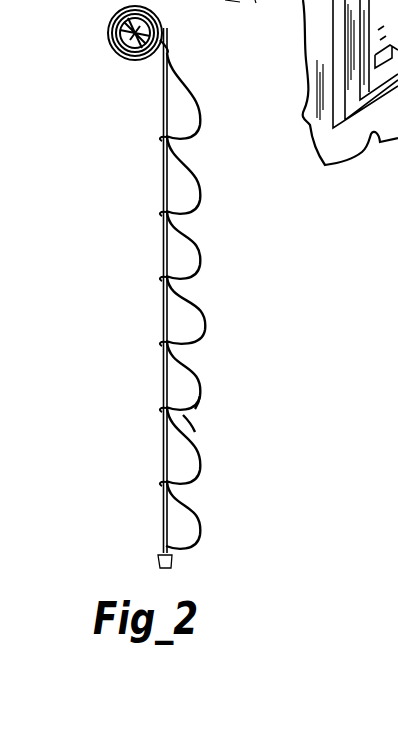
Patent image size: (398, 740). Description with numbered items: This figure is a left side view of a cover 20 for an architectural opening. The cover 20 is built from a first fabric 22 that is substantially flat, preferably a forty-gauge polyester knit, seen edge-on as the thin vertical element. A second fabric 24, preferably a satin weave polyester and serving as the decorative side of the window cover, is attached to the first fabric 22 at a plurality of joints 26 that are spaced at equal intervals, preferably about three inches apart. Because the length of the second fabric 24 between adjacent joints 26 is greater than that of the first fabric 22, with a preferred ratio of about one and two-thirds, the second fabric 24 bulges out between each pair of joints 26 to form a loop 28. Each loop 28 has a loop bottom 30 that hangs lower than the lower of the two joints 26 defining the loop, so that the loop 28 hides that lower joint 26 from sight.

The cover 20 is at (272, 282).
The first fabric 22 is at (162, 233).
The second fabric 24 is at (200, 338).
The joints 26 is at (127, 60).
The loop 28 is at (208, 412).
The loop bottom 30 is at (193, 423).